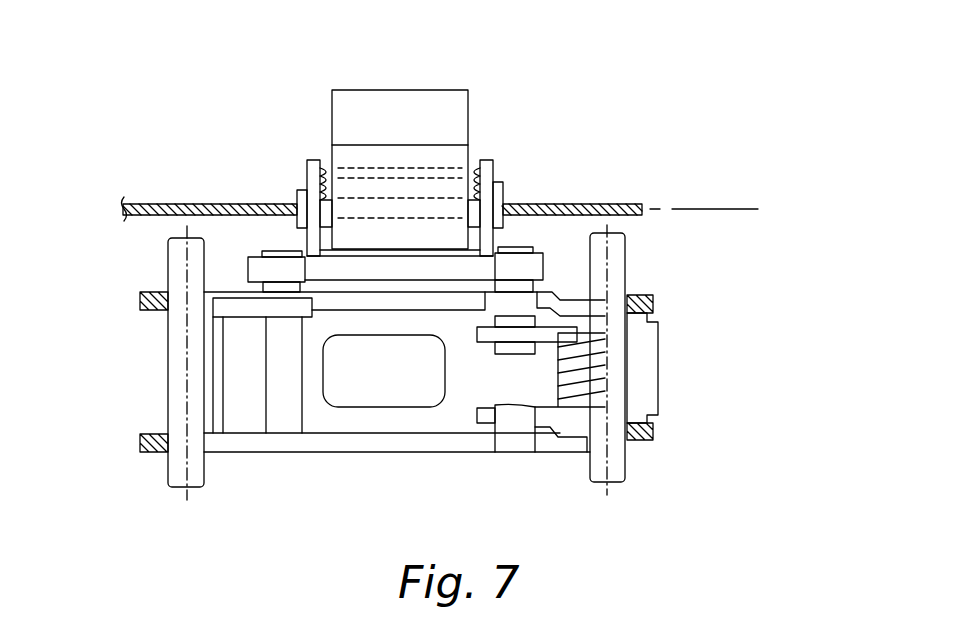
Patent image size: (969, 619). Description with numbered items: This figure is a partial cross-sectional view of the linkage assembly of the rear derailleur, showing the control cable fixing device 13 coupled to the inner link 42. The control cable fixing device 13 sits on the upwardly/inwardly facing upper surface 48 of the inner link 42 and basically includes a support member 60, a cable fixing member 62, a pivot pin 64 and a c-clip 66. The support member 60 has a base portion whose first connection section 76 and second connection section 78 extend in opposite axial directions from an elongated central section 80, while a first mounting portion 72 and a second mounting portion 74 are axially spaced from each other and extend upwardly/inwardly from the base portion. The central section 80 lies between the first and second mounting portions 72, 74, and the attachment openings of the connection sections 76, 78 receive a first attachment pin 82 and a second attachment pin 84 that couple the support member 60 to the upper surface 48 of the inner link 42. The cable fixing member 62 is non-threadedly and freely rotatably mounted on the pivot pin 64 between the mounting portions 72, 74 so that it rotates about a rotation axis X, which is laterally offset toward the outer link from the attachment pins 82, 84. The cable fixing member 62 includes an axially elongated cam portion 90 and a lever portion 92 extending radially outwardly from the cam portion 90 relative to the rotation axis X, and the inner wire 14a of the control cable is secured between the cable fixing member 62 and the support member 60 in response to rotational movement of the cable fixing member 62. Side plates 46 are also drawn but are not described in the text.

The control cable fixing device 13 is at (565, 96).
The inner wire 14a is at (150, 204).
The inner link 42 is at (356, 463).
The side plates 46 is at (168, 487).
The upper surface 48 is at (227, 296).
The support member 60 is at (508, 149).
The cable fixing member 62 is at (461, 75).
The pivot pin 64 is at (300, 192).
The c-clip 66 is at (495, 177).
The first mounting portion 72 is at (487, 160).
The second mounting portion 74 is at (312, 160).
The first connection section 76 is at (537, 267).
The second connection section 78 is at (253, 270).
The central section 80 is at (438, 267).
The first attachment pin 82 is at (513, 354).
The second attachment pin 84 is at (266, 373).
The cam portion 90 is at (348, 240).
The lever portion 92 is at (403, 90).
The rotation axis X is at (732, 209).